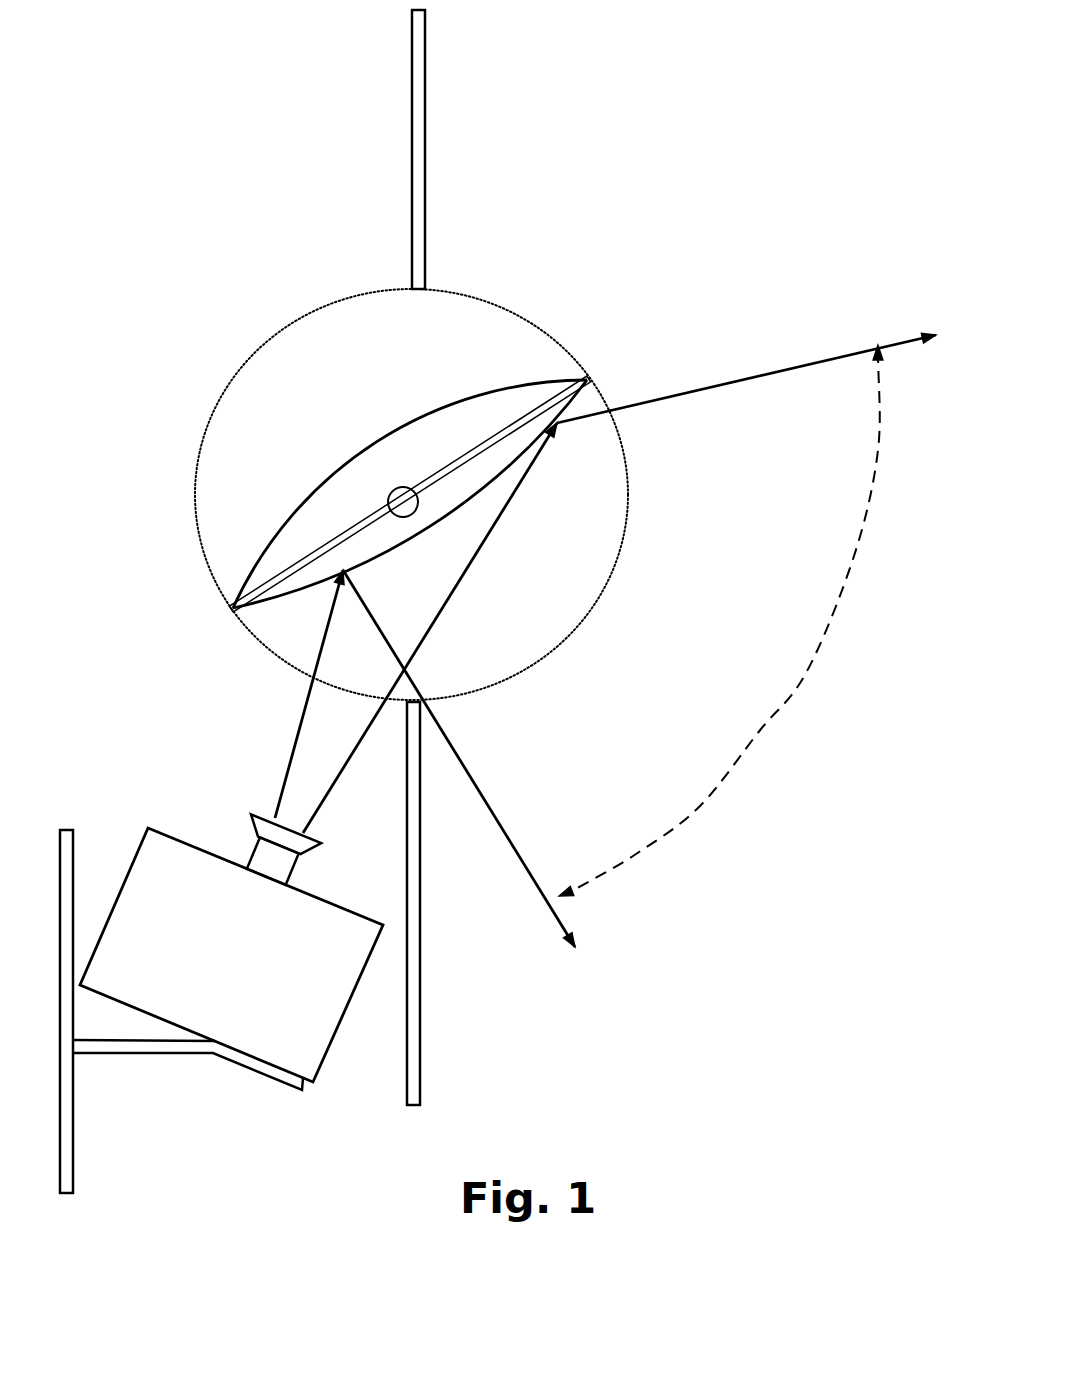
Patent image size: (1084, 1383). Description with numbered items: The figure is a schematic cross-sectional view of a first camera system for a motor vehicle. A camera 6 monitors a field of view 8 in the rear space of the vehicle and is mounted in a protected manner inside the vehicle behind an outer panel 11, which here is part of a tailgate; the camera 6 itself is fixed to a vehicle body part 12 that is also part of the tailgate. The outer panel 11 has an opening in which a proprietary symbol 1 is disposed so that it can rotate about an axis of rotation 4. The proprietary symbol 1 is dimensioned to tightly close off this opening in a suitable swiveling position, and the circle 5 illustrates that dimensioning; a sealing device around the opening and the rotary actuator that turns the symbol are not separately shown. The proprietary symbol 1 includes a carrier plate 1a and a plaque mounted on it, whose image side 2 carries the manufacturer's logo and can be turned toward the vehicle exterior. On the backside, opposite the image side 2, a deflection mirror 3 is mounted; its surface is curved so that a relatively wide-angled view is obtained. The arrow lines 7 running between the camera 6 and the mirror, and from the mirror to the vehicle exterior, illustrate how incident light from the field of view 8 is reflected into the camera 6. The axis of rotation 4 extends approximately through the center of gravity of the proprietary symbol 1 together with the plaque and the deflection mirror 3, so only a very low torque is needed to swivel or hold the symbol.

The proprietary symbol 1 is at (435, 404).
The carrier plate 1a is at (517, 425).
The image side 2 is at (410, 417).
The deflection mirror 3 is at (493, 480).
The axis of rotation 4 is at (410, 488).
The circle 5 is at (243, 365).
The camera 6 is at (312, 1002).
The arrow lines 7 is at (729, 378).
The field of view 8 is at (761, 726).
The outer panel 11 is at (418, 143).
The vehicle body part 12 is at (70, 850).